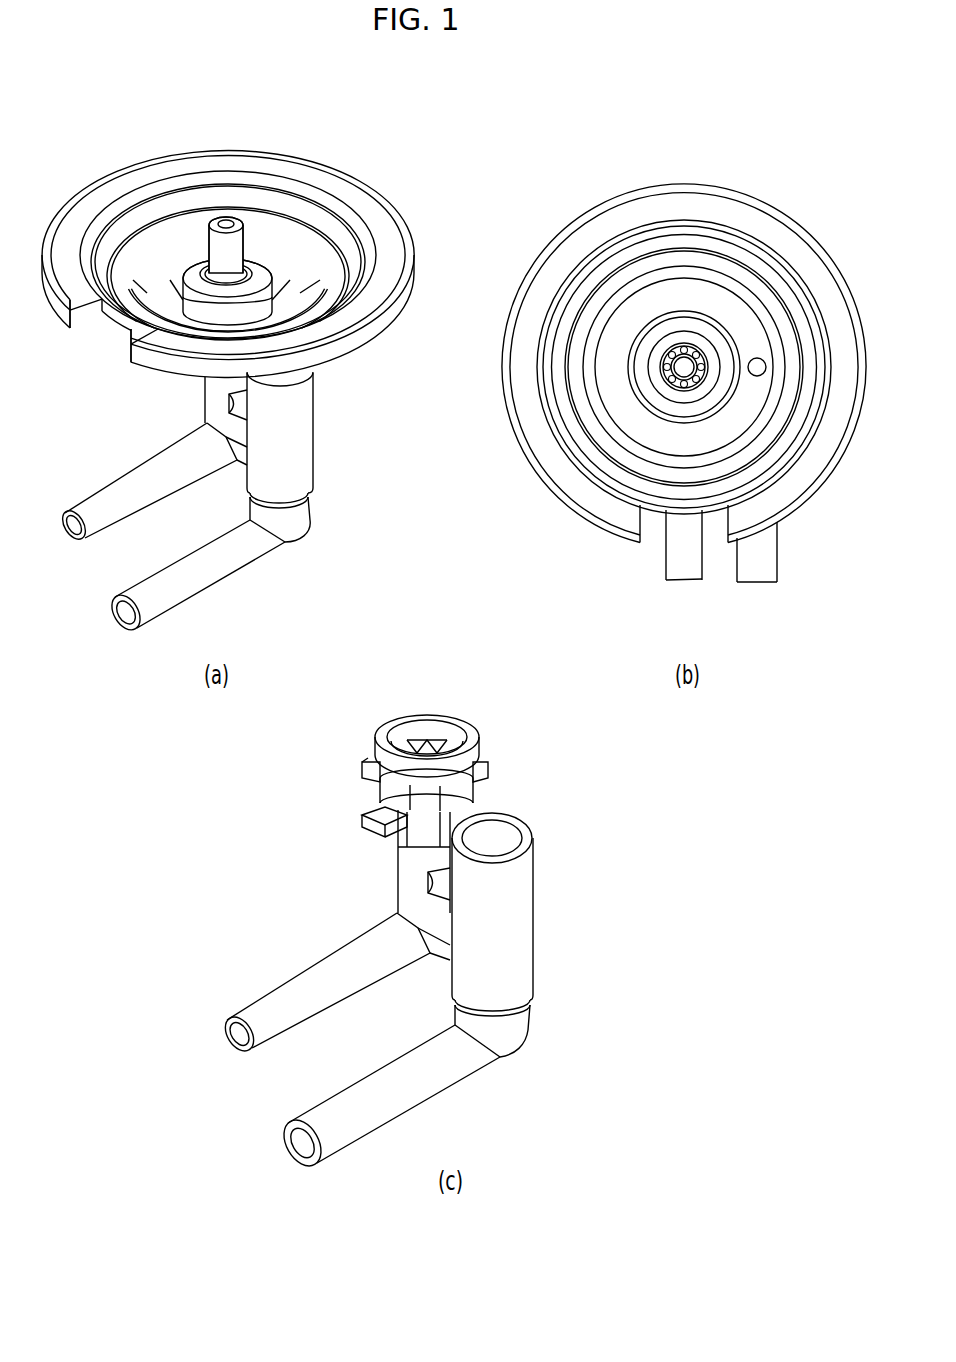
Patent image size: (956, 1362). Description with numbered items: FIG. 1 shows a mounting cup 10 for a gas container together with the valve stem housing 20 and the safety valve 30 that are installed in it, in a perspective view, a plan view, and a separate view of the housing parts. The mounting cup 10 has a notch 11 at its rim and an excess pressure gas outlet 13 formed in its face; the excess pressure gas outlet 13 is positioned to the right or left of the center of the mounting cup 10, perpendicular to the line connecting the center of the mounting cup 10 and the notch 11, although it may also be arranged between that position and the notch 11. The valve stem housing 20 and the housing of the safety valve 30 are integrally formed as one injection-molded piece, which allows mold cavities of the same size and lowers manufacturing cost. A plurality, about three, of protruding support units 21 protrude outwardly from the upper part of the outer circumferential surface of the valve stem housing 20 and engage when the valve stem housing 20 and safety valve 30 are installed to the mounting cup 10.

The mounting cup 10 is at (290, 123).
The notch 11 is at (106, 330).
The excess pressure gas outlet 13 is at (758, 357).
The valve stem housing 20 is at (176, 407).
The protruding support units 21 is at (483, 763).
The safety valve 30 is at (334, 433).